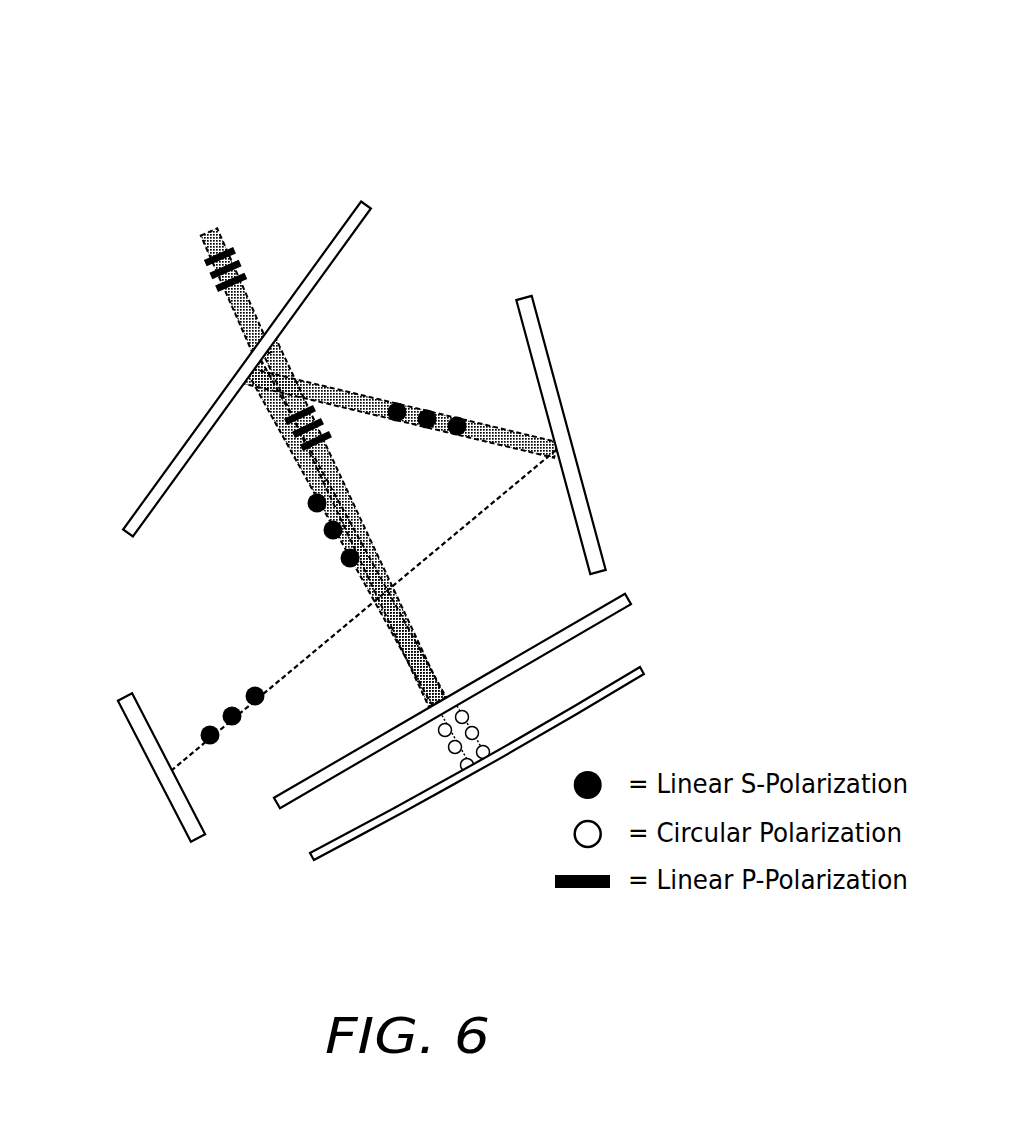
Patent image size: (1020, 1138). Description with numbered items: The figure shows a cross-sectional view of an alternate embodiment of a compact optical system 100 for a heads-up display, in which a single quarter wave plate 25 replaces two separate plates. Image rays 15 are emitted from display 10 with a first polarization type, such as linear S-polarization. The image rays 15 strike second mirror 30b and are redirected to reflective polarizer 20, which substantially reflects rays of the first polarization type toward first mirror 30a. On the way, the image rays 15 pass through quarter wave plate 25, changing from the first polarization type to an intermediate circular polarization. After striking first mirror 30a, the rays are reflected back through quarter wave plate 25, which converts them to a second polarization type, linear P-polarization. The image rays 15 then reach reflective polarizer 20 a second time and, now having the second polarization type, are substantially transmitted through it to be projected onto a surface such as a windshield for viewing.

The folded optical system 100 is at (152, 156).
The display 10 is at (161, 786).
The image rays 15 is at (340, 629).
The reflective polarizer 20 is at (372, 202).
The quarter wave plate 25 is at (278, 810).
The first mirror 30a is at (634, 662).
The second mirror 30b is at (621, 402).